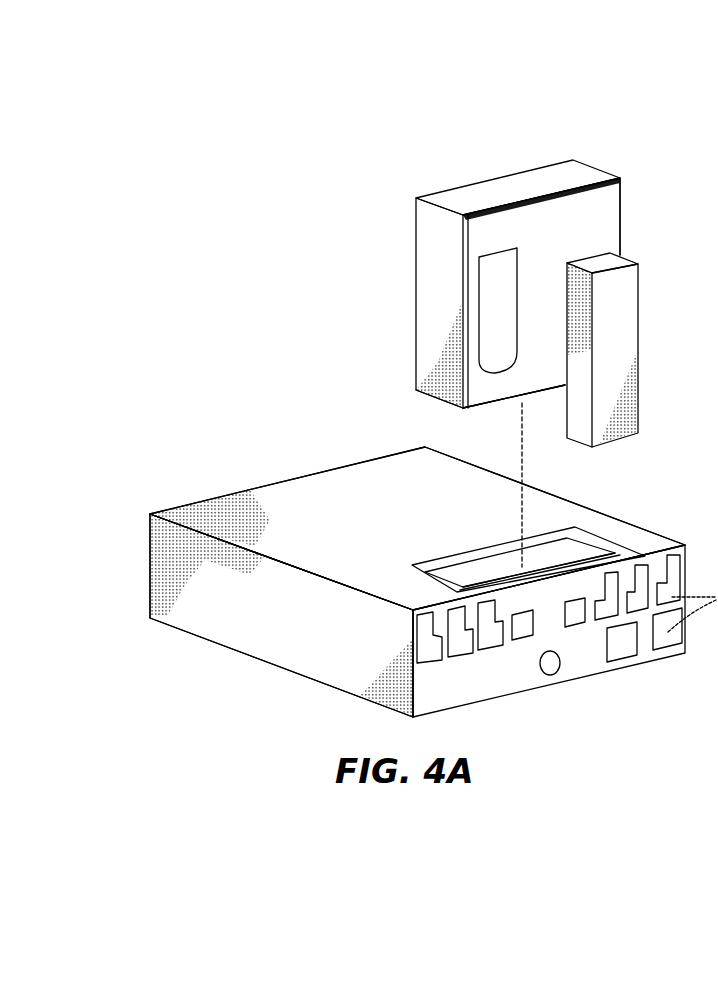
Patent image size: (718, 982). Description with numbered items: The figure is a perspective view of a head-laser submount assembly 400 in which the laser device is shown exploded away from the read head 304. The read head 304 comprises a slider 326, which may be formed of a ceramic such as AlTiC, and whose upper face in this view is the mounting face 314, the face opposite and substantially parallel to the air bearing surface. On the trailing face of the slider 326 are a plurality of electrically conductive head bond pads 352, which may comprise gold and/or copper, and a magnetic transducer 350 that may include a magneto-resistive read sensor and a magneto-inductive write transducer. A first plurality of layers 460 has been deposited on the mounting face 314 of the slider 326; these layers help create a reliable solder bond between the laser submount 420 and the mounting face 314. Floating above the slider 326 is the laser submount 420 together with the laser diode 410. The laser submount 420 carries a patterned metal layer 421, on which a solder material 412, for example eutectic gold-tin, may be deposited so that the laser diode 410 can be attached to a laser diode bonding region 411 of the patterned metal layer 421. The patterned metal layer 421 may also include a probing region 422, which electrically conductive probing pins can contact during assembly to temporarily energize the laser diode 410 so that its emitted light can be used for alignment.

The head-laser submount assembly 400 is at (247, 258).
The read head 304 is at (385, 487).
The mounting face 314 is at (274, 512).
The slider 326 is at (240, 637).
The first plurality of layers 460 is at (582, 548).
The head bond pads 352 is at (430, 660).
The magnetic transducer 350 is at (552, 663).
The laser submount 420 is at (449, 200).
The patterned metal layer 421 is at (583, 182).
The probing region 422 is at (600, 224).
The solder material 412 is at (487, 294).
The laser diode bonding region 411 is at (440, 378).
The laser diode 410 is at (620, 291).